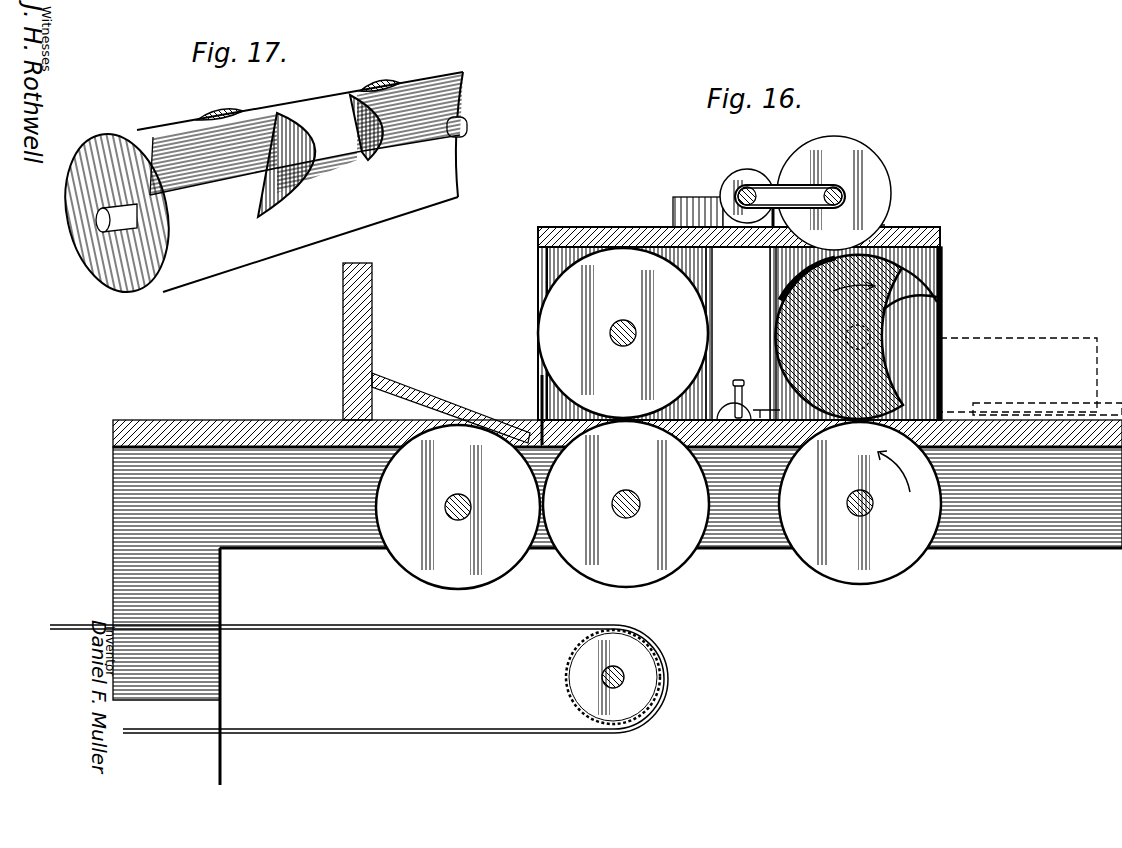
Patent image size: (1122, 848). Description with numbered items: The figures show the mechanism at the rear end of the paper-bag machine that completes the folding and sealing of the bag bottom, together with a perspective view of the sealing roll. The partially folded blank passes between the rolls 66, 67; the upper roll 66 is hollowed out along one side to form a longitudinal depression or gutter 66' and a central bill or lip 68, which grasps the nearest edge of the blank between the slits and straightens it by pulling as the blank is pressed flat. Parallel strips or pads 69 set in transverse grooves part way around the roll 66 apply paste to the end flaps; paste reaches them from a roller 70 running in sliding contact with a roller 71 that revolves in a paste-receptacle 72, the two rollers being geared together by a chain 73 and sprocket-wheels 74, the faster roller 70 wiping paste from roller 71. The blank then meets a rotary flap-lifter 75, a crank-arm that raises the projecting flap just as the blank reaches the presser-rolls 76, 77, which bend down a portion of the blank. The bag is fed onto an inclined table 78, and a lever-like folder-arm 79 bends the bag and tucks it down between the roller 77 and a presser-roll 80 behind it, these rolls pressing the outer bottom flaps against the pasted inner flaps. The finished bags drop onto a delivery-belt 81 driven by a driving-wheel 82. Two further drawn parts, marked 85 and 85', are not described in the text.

In FIG. 17, the roll 66 is at (259, 187).
In FIG. 16, the roll 66 is at (841, 337).
In FIG. 17, the longitudinal depression or gutter 66' is at (306, 150).
In FIG. 16, the roll 67 is at (860, 503).
In FIG. 17, the bill or lip 68 is at (357, 148).
In FIG. 16, the bill or lip 68 is at (942, 303).
In FIG. 17, the strips or pads 69 is at (213, 113).
In FIG. 16, the strips or pads 69 is at (807, 279).
In FIG. 16, the roller 70 is at (893, 205).
In FIG. 16, the roller 71 is at (748, 169).
In FIG. 16, the paste-receptacle 72 is at (673, 208).
In FIG. 16, the chain 73 is at (806, 185).
In FIG. 16, the sprocket-wheels 74 is at (736, 192).
In FIG. 16, the rotary flap-lifter 75 is at (752, 392).
In FIG. 16, the presser-roll 76 is at (623, 333).
In FIG. 16, the presser-roll 77 is at (626, 504).
In FIG. 16, the inclined table 78 is at (455, 408).
In FIG. 16, the folder-arm 79 is at (540, 396).
In FIG. 16, the presser-roll 80 is at (458, 507).
In FIG. 16, the delivery-belt 81 is at (478, 630).
In FIG. 16, the driving-wheel 82 is at (672, 678).
In FIG. 16, the stop 85 is at (770, 402).
In FIG. 16, the pin 85' is at (736, 387).